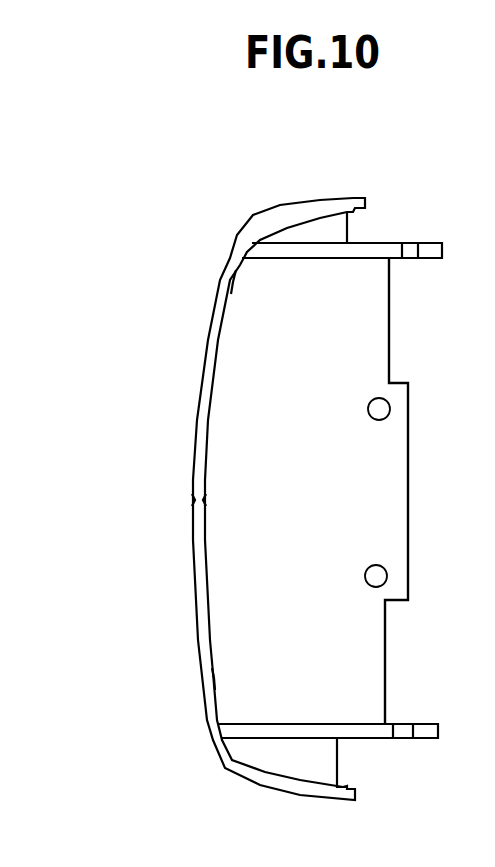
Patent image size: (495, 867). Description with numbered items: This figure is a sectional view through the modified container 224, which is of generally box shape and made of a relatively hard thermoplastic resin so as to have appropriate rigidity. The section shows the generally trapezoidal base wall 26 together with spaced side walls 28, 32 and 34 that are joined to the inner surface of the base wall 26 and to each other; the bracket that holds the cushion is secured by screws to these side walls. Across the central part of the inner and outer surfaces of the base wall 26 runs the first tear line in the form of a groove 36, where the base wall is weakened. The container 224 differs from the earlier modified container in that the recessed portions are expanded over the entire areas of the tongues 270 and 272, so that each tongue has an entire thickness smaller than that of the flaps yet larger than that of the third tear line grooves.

The container 224 is at (231, 238).
The base wall 26 is at (212, 338).
The tongue 270 is at (230, 287).
The tongue 272 is at (213, 693).
The first tear line in the form of a groove 36 is at (193, 502).
The side wall 28 is at (373, 485).
The side wall 34 is at (370, 248).
The side wall 32 is at (375, 732).